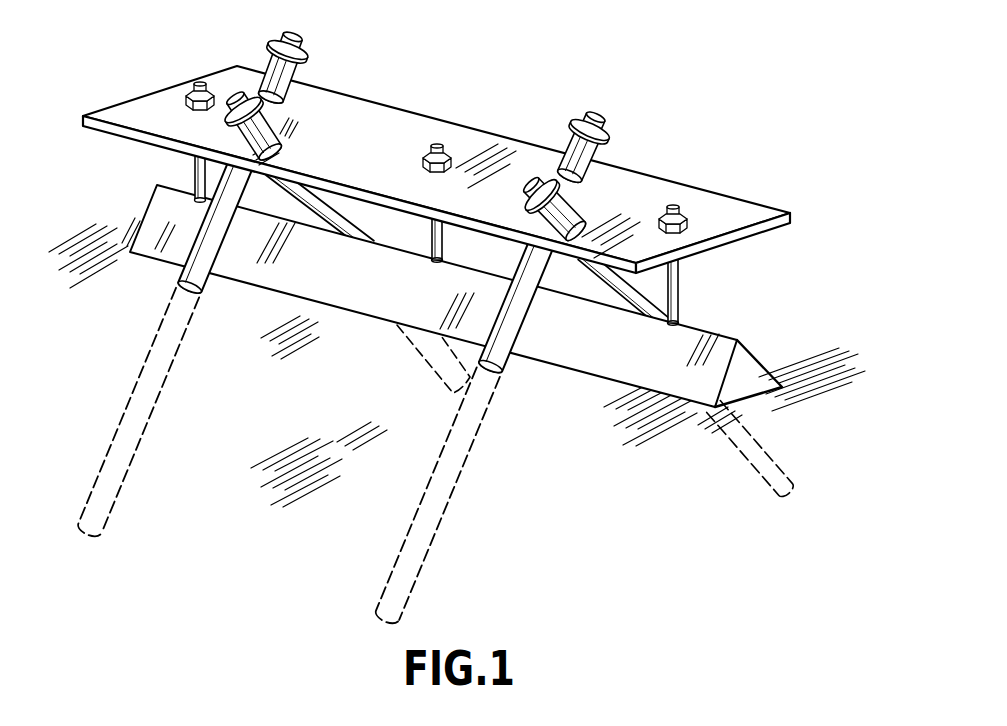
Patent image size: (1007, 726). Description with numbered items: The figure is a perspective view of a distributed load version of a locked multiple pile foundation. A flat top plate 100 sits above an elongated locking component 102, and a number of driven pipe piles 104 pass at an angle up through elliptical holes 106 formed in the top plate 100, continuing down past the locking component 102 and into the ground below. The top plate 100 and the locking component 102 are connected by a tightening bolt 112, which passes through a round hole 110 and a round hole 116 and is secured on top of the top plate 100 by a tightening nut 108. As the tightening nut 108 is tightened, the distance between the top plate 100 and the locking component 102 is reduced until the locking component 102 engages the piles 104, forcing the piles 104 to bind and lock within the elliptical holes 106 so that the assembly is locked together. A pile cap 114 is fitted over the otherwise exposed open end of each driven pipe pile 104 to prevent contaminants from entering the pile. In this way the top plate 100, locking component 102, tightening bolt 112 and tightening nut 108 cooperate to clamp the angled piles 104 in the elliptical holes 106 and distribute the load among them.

The top plate 100 is at (692, 188).
The locking component 102 is at (547, 363).
The piles 104 is at (300, 77).
The elliptical holes 106 is at (283, 147).
The tightening nut 108 is at (190, 90).
The round hole 110 is at (188, 103).
The tightening bolt 112 is at (192, 163).
The pile cap 114 is at (607, 122).
The round hole 116 is at (190, 197).